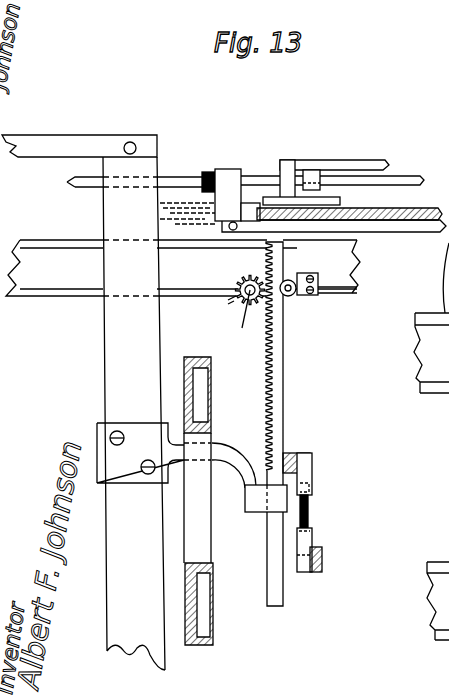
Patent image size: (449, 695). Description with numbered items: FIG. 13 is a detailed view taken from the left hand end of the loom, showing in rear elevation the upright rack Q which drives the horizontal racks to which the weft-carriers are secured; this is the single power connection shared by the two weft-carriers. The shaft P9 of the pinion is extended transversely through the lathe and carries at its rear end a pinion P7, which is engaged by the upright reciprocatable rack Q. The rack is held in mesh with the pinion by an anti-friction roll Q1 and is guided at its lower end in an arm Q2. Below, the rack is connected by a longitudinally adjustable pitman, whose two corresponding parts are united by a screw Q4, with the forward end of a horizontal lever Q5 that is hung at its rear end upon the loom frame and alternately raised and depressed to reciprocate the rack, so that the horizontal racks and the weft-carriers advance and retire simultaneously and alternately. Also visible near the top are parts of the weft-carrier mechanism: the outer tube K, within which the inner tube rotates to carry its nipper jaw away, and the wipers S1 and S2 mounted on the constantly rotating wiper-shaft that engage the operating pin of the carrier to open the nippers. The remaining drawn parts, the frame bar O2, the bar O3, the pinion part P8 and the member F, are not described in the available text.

The frame bar O2 is at (83, 402).
The guide bar O3 is at (413, 222).
The wiper S1 is at (380, 170).
The wiper S2 is at (330, 198).
The outer tube K is at (367, 222).
The upright reciprocatable rack Q is at (277, 350).
The pinion P8 is at (240, 278).
The pinion P7 is at (230, 303).
The shaft P9 is at (239, 321).
The anti-friction roll Q1 is at (289, 280).
The frame bar F is at (206, 408).
The arm Q2 is at (248, 514).
The screw Q4 is at (313, 505).
The horizontal lever Q5 is at (323, 560).